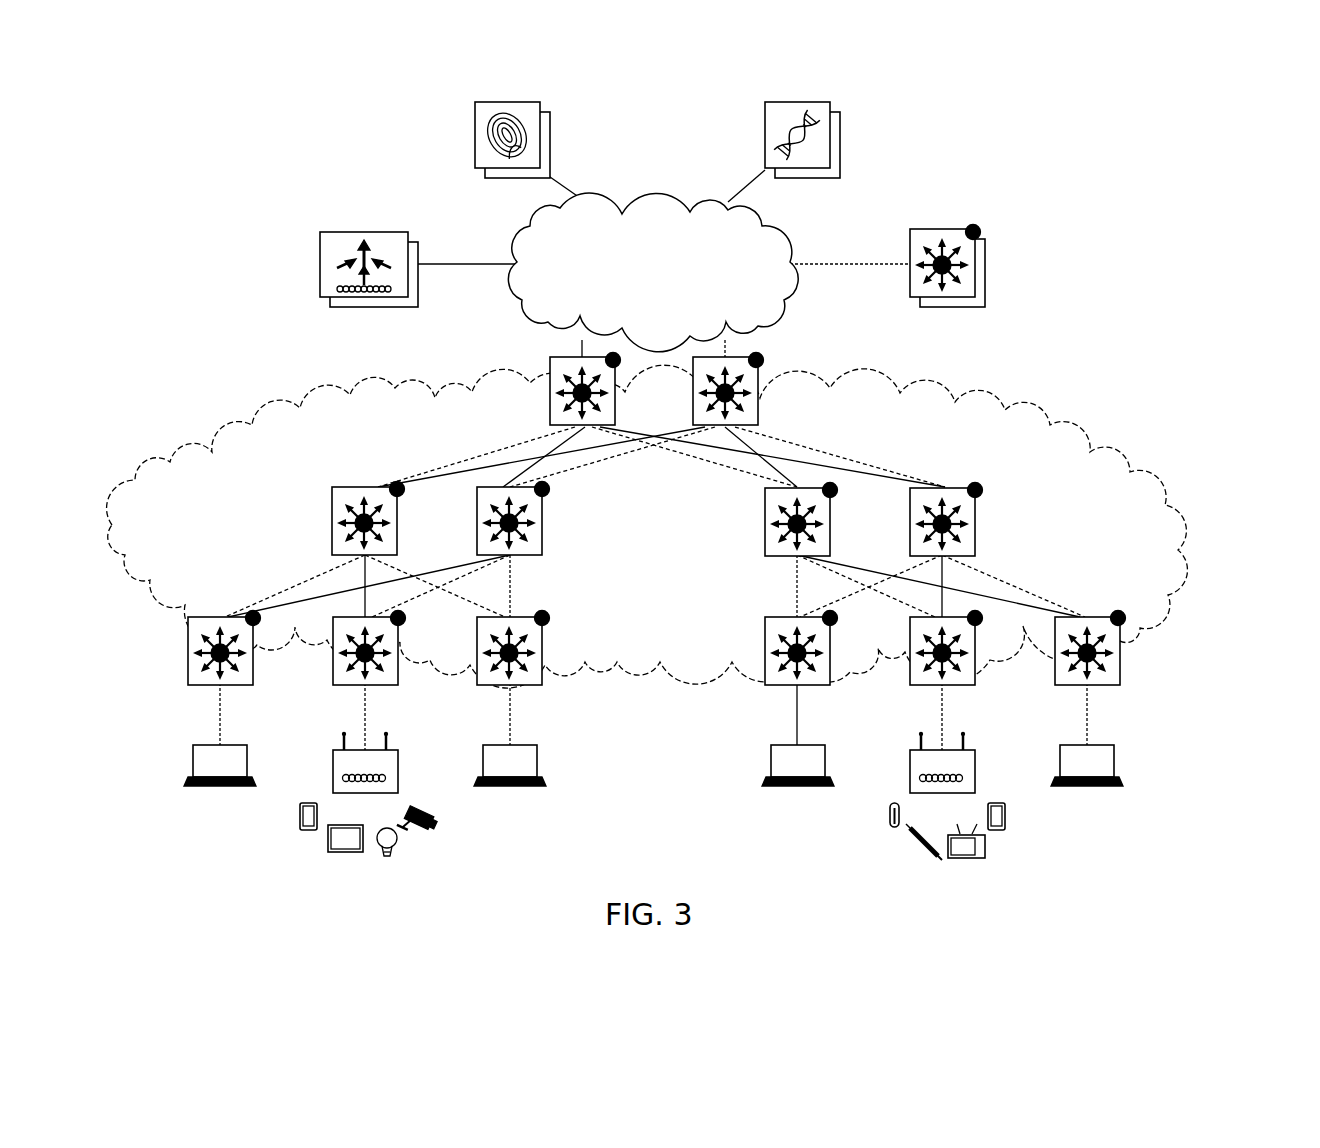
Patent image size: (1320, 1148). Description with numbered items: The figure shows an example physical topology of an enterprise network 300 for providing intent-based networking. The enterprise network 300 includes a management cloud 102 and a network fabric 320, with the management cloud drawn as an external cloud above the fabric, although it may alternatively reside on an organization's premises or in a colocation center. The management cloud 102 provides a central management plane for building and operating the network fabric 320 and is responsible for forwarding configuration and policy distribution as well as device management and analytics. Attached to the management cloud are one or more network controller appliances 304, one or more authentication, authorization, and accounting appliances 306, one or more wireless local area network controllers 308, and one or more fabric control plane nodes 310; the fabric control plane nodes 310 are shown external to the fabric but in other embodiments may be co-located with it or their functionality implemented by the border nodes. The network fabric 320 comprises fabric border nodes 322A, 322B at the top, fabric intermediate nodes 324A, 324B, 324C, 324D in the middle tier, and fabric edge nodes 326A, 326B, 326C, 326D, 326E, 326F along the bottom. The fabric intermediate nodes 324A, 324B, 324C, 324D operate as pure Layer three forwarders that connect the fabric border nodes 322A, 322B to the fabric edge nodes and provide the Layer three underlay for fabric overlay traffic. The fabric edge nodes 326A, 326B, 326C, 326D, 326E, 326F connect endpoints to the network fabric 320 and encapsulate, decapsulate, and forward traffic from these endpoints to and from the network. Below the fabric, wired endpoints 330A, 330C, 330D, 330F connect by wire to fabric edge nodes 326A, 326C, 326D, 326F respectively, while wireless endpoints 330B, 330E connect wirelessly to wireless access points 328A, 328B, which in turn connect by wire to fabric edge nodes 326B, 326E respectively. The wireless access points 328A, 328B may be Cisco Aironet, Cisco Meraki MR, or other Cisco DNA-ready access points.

The enterprise network 300 is at (1256, 210).
The management cloud 102 is at (640, 299).
The network controller appliance 304 is at (841, 178).
The authentication, authorization, and accounting (AAA) appliance 306 is at (483, 178).
The wireless local area network controller (WLC) 308 is at (330, 300).
The fabric control plane node 310 is at (985, 306).
The network fabric 320 is at (640, 553).
The fabric border node 322A is at (548, 358).
The fabric border node 322B is at (762, 358).
The fabric intermediate node 324A is at (330, 488).
The fabric intermediate node 324B is at (545, 558).
The fabric intermediate node 324C is at (762, 559).
The fabric intermediate node 324D is at (979, 488).
The fabric edge node 326A is at (186, 686).
The fabric edge node 326B is at (331, 686).
The fabric edge node 326C is at (544, 686).
The fabric edge node 326D is at (763, 686).
The fabric edge node 326E is at (978, 686).
The fabric edge node 326F is at (1122, 686).
The wireless access point 328A is at (402, 750).
The wireless access point 328B is at (908, 750).
The wired endpoint 330A is at (220, 788).
The wireless endpoint 330B is at (435, 850).
The wired endpoint 330C is at (540, 788).
The wired endpoint 330D is at (770, 788).
The wireless endpoint 330E is at (1012, 852).
The wired endpoint 330F is at (1090, 788).